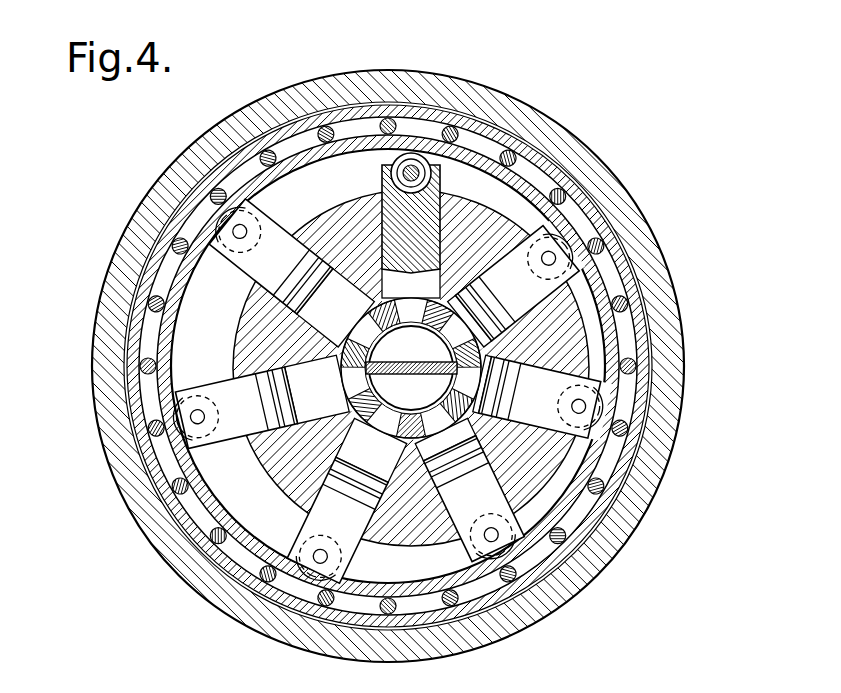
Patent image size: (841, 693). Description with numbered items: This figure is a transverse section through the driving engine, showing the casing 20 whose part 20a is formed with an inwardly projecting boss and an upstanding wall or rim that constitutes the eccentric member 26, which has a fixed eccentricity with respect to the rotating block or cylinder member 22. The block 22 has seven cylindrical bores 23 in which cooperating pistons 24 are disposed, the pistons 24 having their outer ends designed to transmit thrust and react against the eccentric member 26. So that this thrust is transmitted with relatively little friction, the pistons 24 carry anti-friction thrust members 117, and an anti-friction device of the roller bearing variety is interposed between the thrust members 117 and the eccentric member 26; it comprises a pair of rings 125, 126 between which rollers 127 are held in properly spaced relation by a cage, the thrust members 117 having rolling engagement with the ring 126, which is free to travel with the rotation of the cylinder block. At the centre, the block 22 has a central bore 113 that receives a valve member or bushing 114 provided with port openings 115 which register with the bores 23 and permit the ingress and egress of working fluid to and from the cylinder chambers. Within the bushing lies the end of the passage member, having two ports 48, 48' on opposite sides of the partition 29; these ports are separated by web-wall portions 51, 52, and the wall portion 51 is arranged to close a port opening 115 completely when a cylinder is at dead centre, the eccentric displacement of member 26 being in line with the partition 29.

The casing 20 is at (562, 104).
The casing part 20a is at (684, 332).
The block or cylinder member 22 is at (562, 200).
The bores 23 is at (443, 218).
The pistons 24 is at (446, 308).
The eccentric member 26 is at (262, 128).
The partition 29 is at (404, 375).
The port 48 is at (411, 368).
The port 48' is at (411, 370).
The web-wall portion 51 is at (458, 384).
The web-wall portion 52 is at (345, 394).
The central bore 113 is at (390, 302).
The valve member or bushing 114 is at (487, 297).
The port openings 115 is at (368, 326).
The anti-friction thrust members 117 is at (455, 115).
The ring 125 is at (418, 152).
The ring 126 is at (346, 142).
The rollers 127 is at (329, 130).